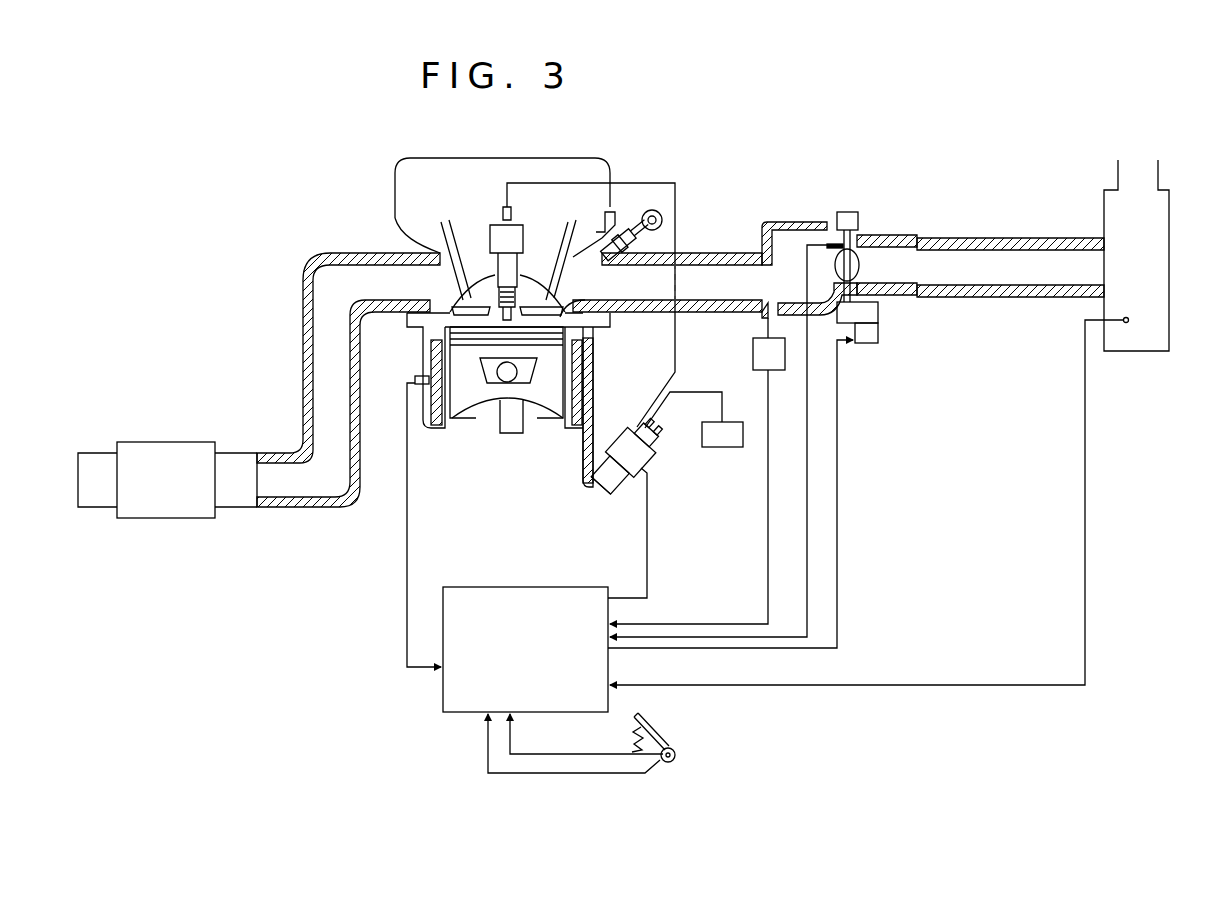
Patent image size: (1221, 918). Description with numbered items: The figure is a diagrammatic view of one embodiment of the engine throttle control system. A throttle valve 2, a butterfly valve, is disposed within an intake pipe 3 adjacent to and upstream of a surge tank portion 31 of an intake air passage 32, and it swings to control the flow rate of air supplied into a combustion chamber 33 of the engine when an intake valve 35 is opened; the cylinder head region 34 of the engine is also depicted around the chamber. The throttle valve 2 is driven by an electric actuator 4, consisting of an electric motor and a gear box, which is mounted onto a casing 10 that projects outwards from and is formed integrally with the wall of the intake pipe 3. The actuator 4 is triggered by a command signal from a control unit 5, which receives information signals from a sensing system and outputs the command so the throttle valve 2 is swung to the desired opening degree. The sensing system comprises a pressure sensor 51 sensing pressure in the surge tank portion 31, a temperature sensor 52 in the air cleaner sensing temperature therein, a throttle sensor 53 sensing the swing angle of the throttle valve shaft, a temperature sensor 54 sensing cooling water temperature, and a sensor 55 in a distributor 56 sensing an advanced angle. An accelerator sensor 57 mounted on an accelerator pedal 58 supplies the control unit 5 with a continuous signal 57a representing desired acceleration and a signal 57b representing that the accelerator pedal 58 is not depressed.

The throttle valve 2 is at (867, 265).
The intake pipe 3 is at (870, 233).
The actuator 4 is at (880, 340).
The control unit 5 is at (540, 585).
The casing 10 is at (880, 313).
The surge tank portion 31 is at (790, 237).
The intake air passage 32 is at (730, 290).
The combustion chamber 33 is at (530, 323).
The cylinder head 34 is at (618, 298).
The intake valve 35 is at (547, 282).
The pressure sensor 51 is at (778, 372).
The temperature sensor 52 is at (1130, 318).
The throttle sensor 53 is at (847, 212).
The temperature sensor 54 is at (418, 377).
The sensor 55 is at (642, 465).
The distributor 56 is at (648, 445).
The accelerator sensor 57 is at (671, 763).
The continuous signal 57a is at (550, 752).
The signal 57b is at (577, 774).
The accelerator pedal 58 is at (657, 732).